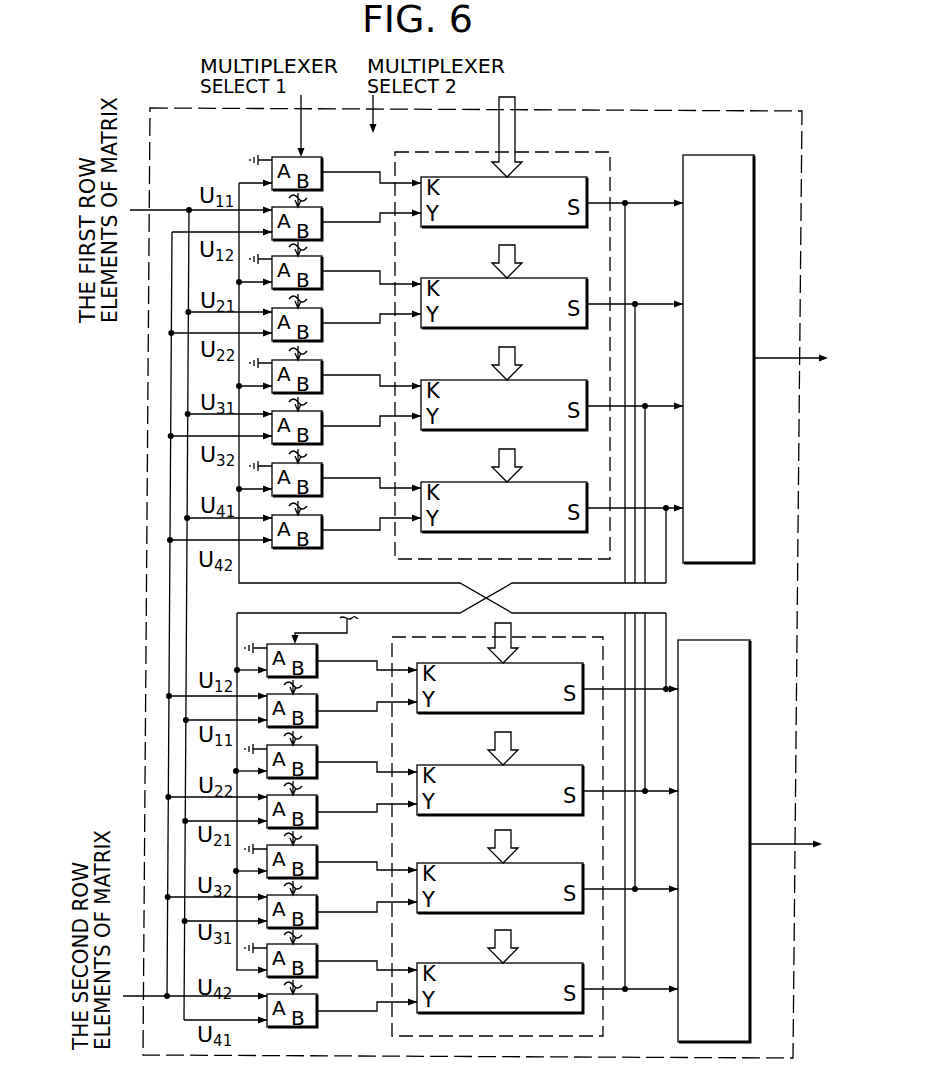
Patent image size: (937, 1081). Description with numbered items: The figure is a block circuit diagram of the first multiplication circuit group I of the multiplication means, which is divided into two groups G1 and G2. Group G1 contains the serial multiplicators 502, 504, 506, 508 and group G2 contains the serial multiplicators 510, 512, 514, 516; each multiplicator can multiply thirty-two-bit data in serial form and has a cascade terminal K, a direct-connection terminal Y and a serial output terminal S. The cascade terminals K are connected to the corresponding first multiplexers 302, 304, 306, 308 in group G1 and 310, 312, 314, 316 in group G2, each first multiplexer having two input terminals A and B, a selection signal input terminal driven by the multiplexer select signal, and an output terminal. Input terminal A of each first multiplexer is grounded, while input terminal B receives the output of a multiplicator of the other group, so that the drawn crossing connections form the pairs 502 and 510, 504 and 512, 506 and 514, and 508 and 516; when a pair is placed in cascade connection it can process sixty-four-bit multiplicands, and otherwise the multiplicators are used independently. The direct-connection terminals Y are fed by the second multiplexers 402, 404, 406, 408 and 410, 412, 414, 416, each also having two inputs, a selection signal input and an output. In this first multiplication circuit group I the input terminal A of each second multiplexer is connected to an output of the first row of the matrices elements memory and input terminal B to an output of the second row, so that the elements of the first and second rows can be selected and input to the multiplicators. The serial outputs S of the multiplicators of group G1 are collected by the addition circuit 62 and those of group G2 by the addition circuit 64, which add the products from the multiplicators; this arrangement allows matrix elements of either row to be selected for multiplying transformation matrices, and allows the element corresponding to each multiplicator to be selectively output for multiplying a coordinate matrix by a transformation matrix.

The first multiplexer 302 is at (322, 164).
The first multiplexer 304 is at (322, 263).
The first multiplexer 306 is at (322, 367).
The first multiplexer 308 is at (322, 470).
The first multiplexer 310 is at (317, 652).
The first multiplexer 312 is at (317, 753).
The first multiplexer 314 is at (317, 853).
The first multiplexer 316 is at (317, 952).
The second multiplexer 402 is at (322, 213).
The second multiplexer 404 is at (322, 315).
The second multiplexer 406 is at (322, 418).
The second multiplexer 408 is at (322, 522).
The second multiplexer 410 is at (317, 704).
The second multiplexer 412 is at (317, 805).
The second multiplexer 414 is at (317, 905).
The second multiplexer 416 is at (317, 1004).
The serial multiplicator 502 is at (545, 177).
The serial multiplicator 504 is at (545, 278).
The serial multiplicator 506 is at (545, 380).
The serial multiplicator 508 is at (545, 482).
The serial multiplicator 510 is at (541, 663).
The serial multiplicator 512 is at (541, 765).
The serial multiplicator 514 is at (541, 863).
The serial multiplicator 516 is at (541, 963).
The addition circuit 62 is at (756, 205).
The addition circuit 64 is at (752, 672).
The group G1 is at (610, 178).
The group G2 is at (603, 1012).
The multiplication circuit group I is at (802, 140).